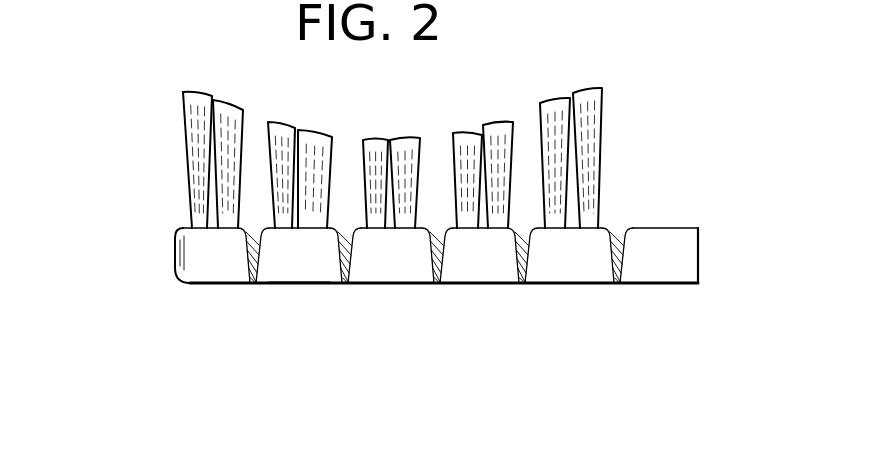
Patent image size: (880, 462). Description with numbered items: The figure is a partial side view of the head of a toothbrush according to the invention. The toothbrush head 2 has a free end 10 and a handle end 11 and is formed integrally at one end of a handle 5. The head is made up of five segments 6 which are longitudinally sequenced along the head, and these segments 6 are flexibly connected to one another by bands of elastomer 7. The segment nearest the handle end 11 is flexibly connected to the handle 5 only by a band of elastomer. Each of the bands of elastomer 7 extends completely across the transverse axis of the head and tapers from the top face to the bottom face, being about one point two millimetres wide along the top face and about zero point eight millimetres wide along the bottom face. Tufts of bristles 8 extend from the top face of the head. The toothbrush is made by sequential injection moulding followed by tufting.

The toothbrush head 2 is at (407, 219).
The handle 5 is at (700, 258).
The segments 6 is at (303, 268).
The bands of elastomer 7 is at (622, 253).
The tufts of bristles 8 is at (603, 94).
The free end 10 is at (407, 259).
The handle end 11 is at (613, 220).